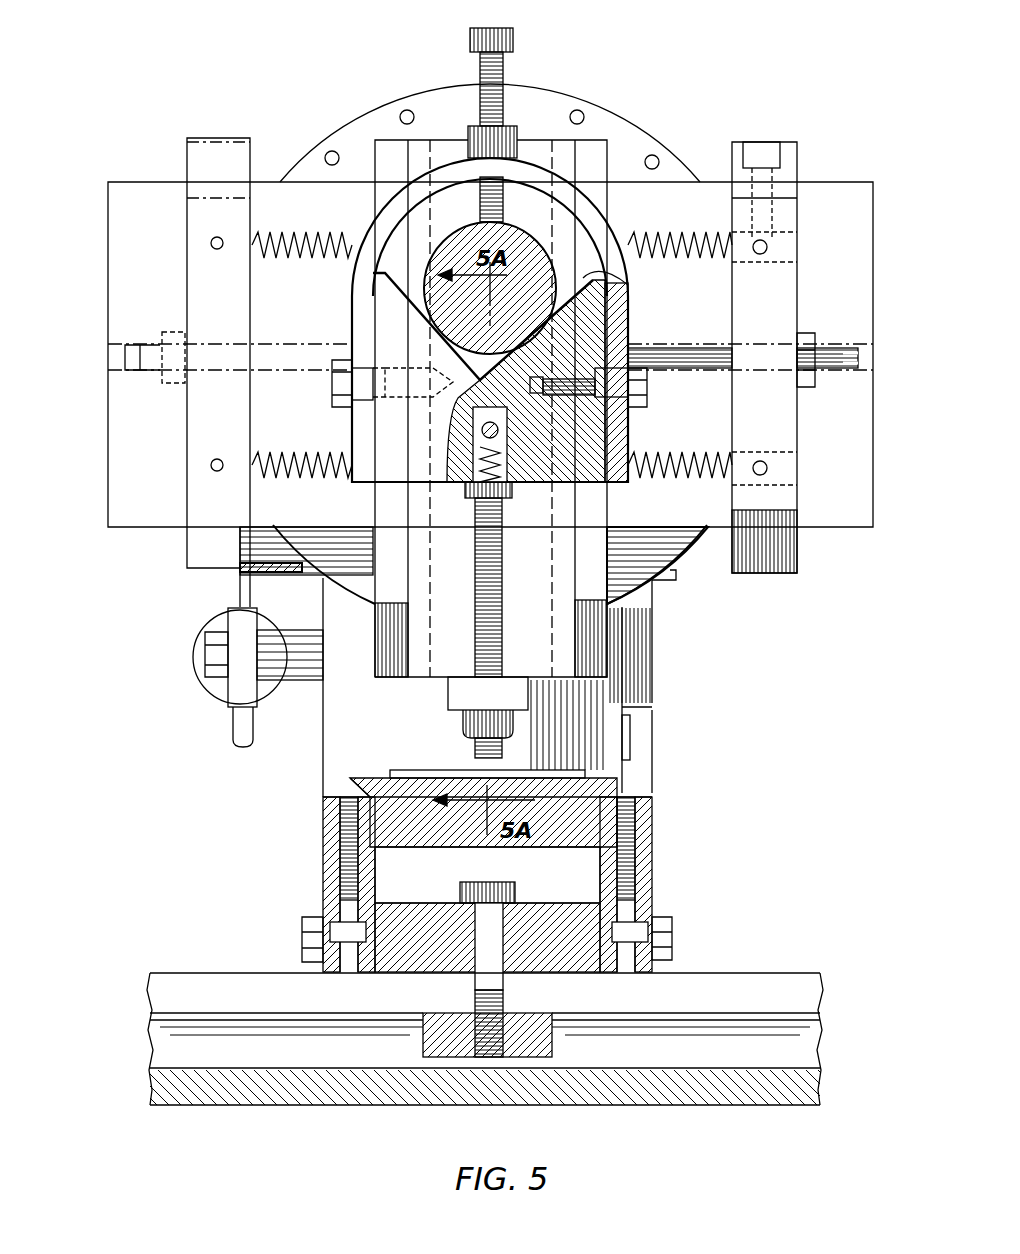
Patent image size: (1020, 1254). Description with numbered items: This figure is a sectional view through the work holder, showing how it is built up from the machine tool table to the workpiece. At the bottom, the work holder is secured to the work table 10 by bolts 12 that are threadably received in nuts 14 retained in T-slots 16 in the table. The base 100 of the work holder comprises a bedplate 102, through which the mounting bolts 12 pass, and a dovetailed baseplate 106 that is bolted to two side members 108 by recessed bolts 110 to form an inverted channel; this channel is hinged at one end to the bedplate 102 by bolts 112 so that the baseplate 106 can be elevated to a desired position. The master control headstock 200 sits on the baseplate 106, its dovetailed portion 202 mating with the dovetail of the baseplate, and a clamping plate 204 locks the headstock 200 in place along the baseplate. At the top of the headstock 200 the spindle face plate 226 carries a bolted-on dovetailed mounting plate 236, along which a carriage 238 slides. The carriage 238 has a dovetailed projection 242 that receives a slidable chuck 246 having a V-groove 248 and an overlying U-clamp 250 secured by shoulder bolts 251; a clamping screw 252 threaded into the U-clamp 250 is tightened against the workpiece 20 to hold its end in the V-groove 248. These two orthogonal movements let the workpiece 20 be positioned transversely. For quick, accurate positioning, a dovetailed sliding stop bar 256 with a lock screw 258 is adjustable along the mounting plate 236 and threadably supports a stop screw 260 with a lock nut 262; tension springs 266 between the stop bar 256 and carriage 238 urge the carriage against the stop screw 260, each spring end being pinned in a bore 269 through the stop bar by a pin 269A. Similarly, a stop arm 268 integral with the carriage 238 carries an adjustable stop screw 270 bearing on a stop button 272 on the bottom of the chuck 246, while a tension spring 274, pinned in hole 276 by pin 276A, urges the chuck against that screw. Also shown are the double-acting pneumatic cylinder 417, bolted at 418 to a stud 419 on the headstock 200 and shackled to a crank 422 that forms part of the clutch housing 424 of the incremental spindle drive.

The work table 10 is at (195, 973).
The bolts 12 is at (512, 890).
The nuts 14 is at (423, 1040).
The T-slots 16 is at (172, 1046).
The workpiece 20 is at (442, 255).
The base 100 is at (656, 830).
The bedplate 102 is at (410, 920).
The dovetailed baseplate 106 is at (412, 776).
The side members 108 is at (652, 885).
The recessed bolts 110 is at (640, 868).
The bolts 112 is at (302, 947).
The master control headstock 200 is at (652, 682).
The dovetailed portion 202 is at (352, 790).
The clamping plate 204 is at (655, 745).
The spindle face plate 226 is at (370, 120).
The dovetailed mounting plate 236 is at (108, 212).
The carriage 238 is at (620, 650).
The dovetailed projection 242 is at (410, 512).
The slidable chuck 246 is at (604, 486).
The V-groove 248 is at (626, 290).
The U-clamp 250 is at (352, 305).
The shoulder bolts 251 is at (338, 408).
The clamping screw 252 is at (516, 40).
The sliding stop bar 256 is at (797, 299).
The lock screw 258 is at (757, 140).
The stop screw 260 is at (836, 349).
The lock nut 262 is at (806, 388).
The tension springs 266 is at (702, 242).
The stop arm 268 is at (528, 700).
The bore 269 is at (787, 247).
The pin 269A is at (768, 249).
The adjustable stop screw 270 is at (478, 622).
The stop button 272 is at (499, 498).
The tension spring 274 is at (452, 452).
The hole 276 is at (505, 437).
The pin 276A is at (484, 430).
The double-acting pneumatic cylinder 417 is at (200, 690).
The bolt 418 is at (205, 657).
The stud 419 is at (300, 682).
The crank 422 is at (240, 590).
The clutch housing 424 is at (265, 575).